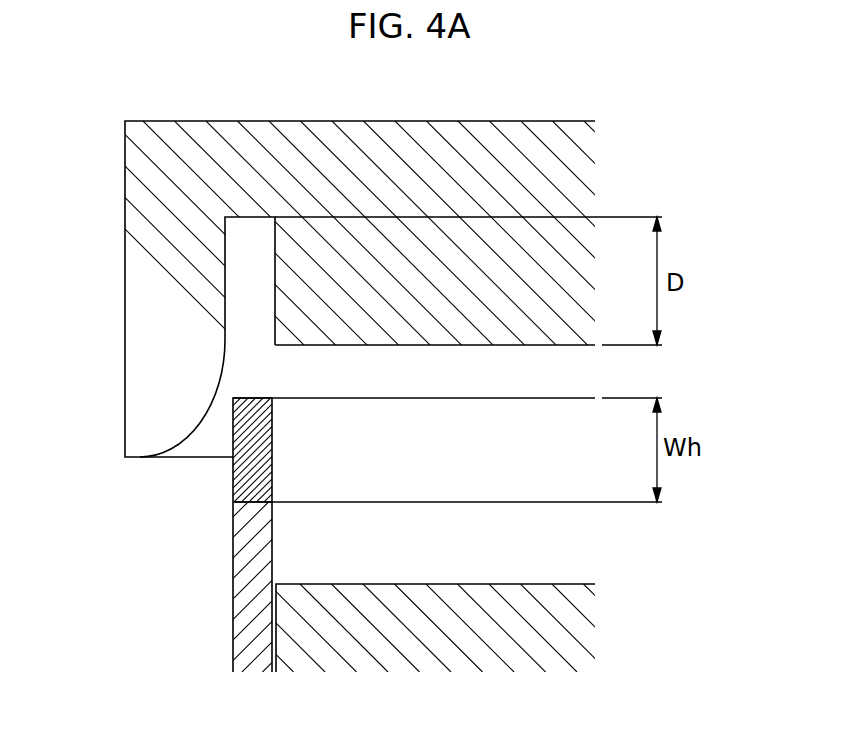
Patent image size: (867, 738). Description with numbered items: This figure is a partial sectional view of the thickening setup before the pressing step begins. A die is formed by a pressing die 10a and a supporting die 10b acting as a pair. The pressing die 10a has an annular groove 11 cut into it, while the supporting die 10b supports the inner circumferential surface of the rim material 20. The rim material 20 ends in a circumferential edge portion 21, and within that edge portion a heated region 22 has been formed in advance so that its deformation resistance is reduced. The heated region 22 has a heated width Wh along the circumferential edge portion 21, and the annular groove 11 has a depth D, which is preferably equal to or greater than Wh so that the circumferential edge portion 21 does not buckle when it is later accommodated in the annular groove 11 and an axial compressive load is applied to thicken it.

The pressing die 10a is at (268, 120).
The supporting die 10b is at (287, 643).
The annular groove 11 is at (248, 222).
The rim material 20 is at (245, 508).
The circumferential edge portion 21 is at (233, 482).
The heated region 22 is at (243, 432).